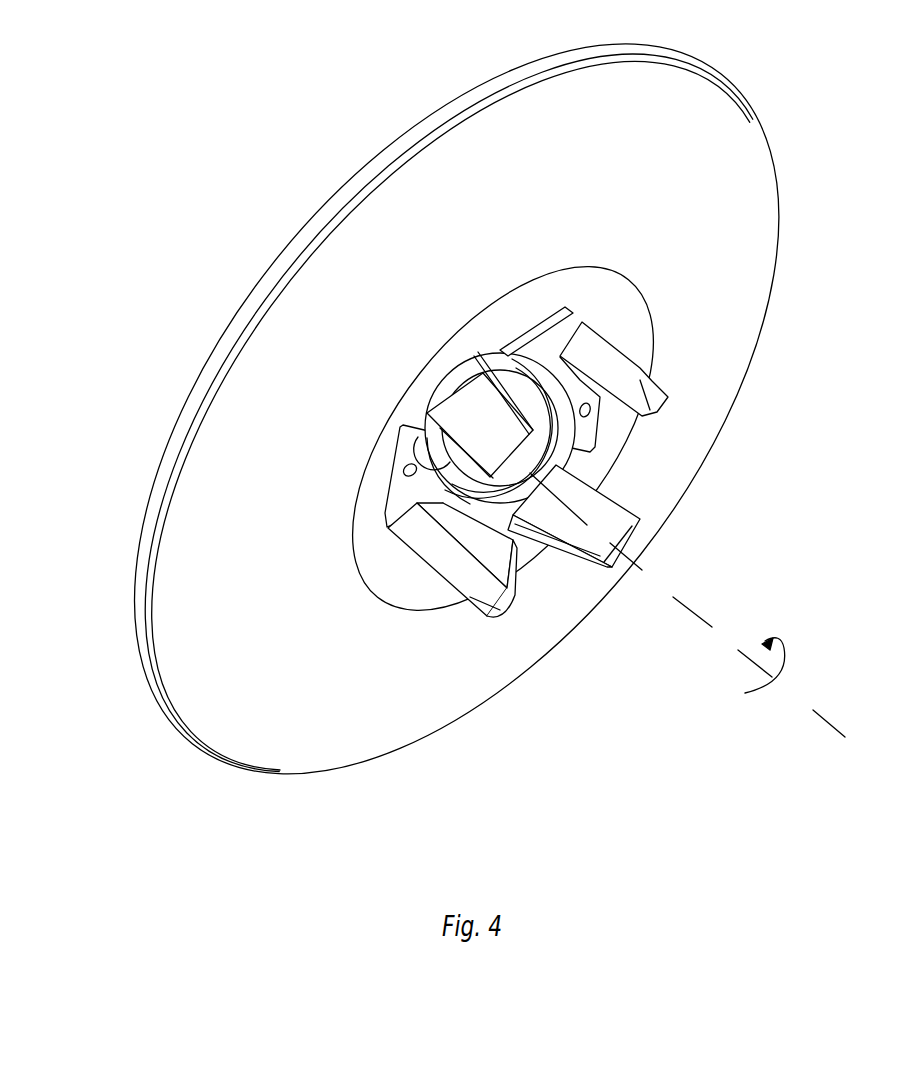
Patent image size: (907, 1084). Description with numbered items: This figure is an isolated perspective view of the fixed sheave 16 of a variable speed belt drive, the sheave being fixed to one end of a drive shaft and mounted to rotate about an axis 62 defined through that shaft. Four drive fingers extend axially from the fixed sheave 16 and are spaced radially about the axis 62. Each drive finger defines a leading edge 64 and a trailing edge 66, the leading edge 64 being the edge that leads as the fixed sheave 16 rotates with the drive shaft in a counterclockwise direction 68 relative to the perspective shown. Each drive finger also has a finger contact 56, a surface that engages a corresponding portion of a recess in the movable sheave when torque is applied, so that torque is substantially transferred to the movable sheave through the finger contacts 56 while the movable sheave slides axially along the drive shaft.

The fixed sheave 16 is at (690, 62).
The finger contact 56 is at (417, 425).
The axis 62 is at (830, 723).
The leading edge 64 is at (492, 475).
The trailing edge 66 is at (497, 367).
The counterclockwise direction 68 is at (793, 650).